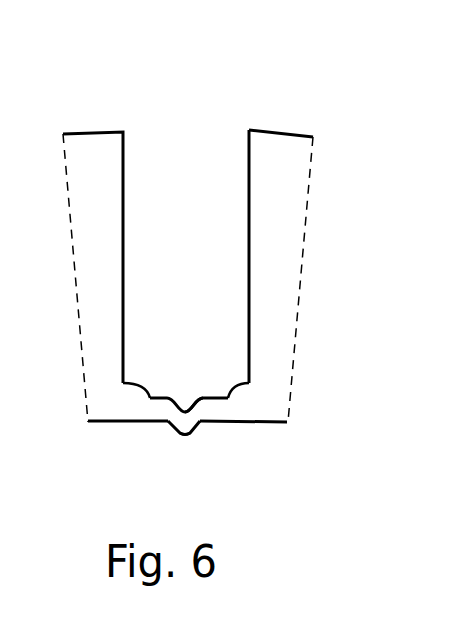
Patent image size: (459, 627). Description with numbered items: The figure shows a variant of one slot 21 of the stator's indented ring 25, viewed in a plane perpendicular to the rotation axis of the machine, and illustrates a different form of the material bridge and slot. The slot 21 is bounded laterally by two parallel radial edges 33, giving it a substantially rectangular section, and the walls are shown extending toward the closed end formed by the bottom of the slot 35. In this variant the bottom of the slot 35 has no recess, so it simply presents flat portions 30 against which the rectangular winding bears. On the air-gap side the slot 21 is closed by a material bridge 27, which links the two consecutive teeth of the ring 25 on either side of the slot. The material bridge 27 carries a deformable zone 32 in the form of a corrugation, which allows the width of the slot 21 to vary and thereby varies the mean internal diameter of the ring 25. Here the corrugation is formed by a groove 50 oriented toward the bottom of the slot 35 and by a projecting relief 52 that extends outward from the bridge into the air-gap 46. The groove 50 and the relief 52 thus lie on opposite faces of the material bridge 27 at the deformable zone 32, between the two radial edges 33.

The slot 21 is at (218, 231).
The indented ring 25 is at (290, 173).
The radial edges 33 is at (249, 212).
The flat portions 30 is at (123, 383).
The bottom of the slot 35 is at (145, 395).
The groove 50 is at (203, 400).
The material bridge 27 is at (153, 405).
The deformable zone 32 is at (188, 432).
The projecting relief 52 is at (184, 427).
The air-gap 46 is at (263, 423).